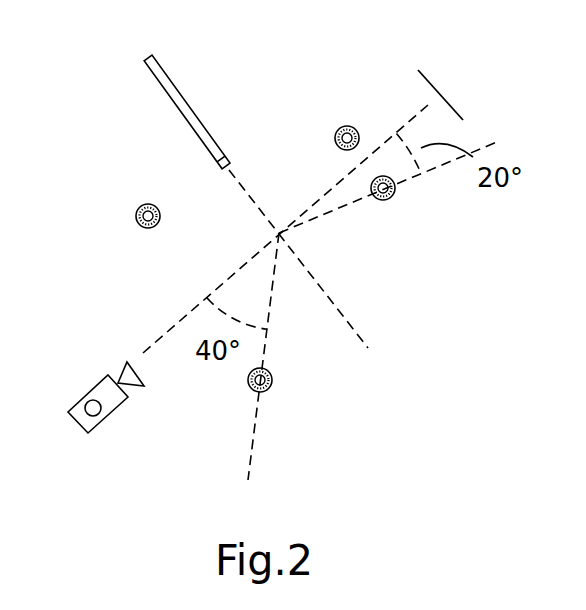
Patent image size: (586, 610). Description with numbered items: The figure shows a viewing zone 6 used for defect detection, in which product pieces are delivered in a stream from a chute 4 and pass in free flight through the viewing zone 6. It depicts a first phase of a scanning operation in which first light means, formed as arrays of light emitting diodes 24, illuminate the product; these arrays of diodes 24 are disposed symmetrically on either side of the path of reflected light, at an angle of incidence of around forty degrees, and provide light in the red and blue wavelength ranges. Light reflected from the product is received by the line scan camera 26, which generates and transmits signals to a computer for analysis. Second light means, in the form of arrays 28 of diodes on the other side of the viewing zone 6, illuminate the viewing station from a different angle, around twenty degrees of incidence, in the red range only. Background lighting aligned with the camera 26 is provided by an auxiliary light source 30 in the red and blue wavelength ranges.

The chute 4 is at (173, 90).
The viewing zone 6 is at (272, 184).
The arrays of light emitting diodes 24 is at (342, 127).
The line scan camera 26 is at (425, 82).
The arrays of diodes 28 is at (137, 219).
The auxiliary light source 30 is at (89, 404).